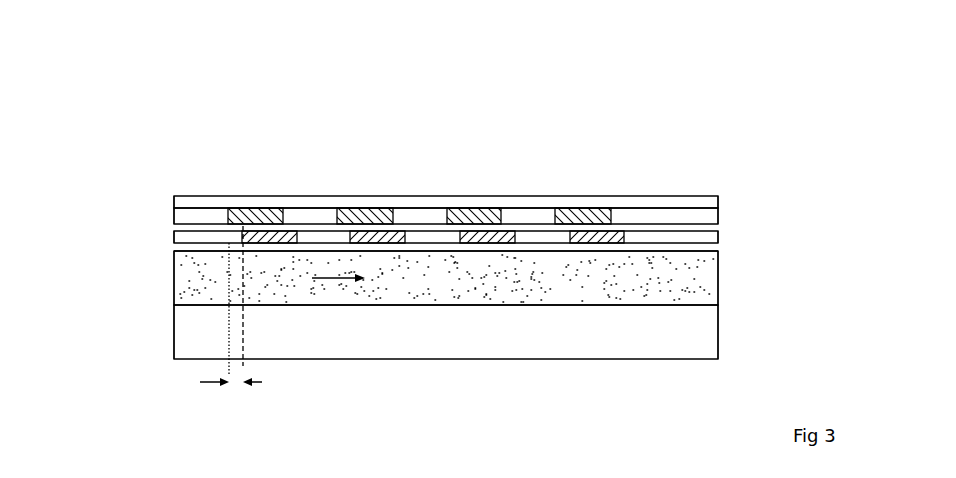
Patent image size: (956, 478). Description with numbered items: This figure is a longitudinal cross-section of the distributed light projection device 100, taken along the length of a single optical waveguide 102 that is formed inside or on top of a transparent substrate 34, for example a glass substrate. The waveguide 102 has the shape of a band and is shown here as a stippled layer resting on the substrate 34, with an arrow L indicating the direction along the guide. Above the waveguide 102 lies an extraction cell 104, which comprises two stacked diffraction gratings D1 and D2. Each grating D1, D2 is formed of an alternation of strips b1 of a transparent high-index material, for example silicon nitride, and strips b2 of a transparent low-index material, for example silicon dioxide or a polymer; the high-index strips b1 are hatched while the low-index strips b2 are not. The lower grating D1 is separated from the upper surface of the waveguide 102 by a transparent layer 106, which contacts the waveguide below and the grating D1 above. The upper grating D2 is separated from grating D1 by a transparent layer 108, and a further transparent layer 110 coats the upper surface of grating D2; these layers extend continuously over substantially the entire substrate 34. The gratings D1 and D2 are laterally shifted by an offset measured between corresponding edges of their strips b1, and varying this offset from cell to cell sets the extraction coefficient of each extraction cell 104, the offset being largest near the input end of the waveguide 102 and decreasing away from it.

The distributed light projection device 100 is at (783, 119).
The optical waveguide 102 is at (175, 270).
The extraction cell 104 is at (358, 176).
The transparent layer 106 is at (641, 248).
The transparent layer 108 is at (703, 232).
The transparent layer 110 is at (702, 205).
The transparent substrate 34 is at (200, 325).
The diffraction grating D1 is at (166, 238).
The diffraction grating D2 is at (166, 215).
The strip of high index b1 is at (625, 237).
The strip of low index b2 is at (567, 237).
The light propagation direction L is at (312, 278).